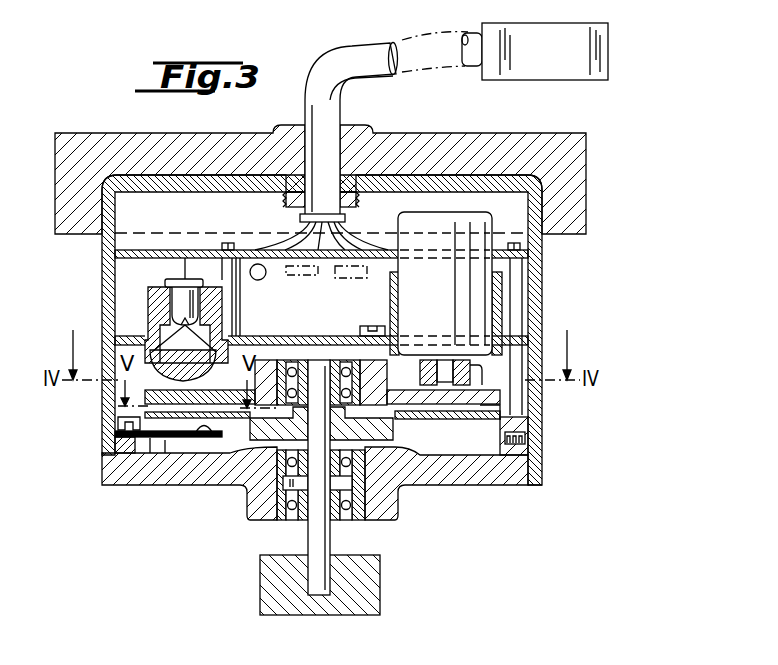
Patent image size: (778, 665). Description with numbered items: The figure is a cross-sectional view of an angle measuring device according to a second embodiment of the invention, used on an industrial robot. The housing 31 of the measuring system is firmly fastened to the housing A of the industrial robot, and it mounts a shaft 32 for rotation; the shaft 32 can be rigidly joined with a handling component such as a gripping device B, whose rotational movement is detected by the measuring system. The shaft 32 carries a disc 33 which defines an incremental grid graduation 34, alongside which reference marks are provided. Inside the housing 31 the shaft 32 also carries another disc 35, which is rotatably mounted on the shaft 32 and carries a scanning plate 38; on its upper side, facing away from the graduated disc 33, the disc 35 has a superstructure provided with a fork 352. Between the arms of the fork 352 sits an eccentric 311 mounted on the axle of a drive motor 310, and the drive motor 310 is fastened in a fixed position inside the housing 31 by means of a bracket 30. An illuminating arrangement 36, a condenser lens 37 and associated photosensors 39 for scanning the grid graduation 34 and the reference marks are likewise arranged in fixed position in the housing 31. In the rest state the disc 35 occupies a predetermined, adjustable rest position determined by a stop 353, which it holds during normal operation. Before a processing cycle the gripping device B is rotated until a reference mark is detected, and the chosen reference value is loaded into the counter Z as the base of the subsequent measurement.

The bracket 30 is at (491, 283).
The housing 31 is at (548, 333).
The shaft 32 is at (308, 540).
The disc 33 is at (222, 442).
The incremental grid graduation 34 is at (185, 437).
The disc 35 is at (414, 393).
The illuminating arrangement 36 is at (175, 297).
The condenser lens 37 is at (178, 358).
The scanning plate 38 is at (158, 428).
The photosensors 39 is at (207, 434).
The drive motor 310 is at (463, 283).
The eccentric 311 is at (462, 405).
The fork 352 is at (412, 382).
The stop 353 is at (543, 413).
The housing of the industrial robot A is at (518, 147).
The gripping device B is at (262, 590).
The counter Z is at (595, 55).